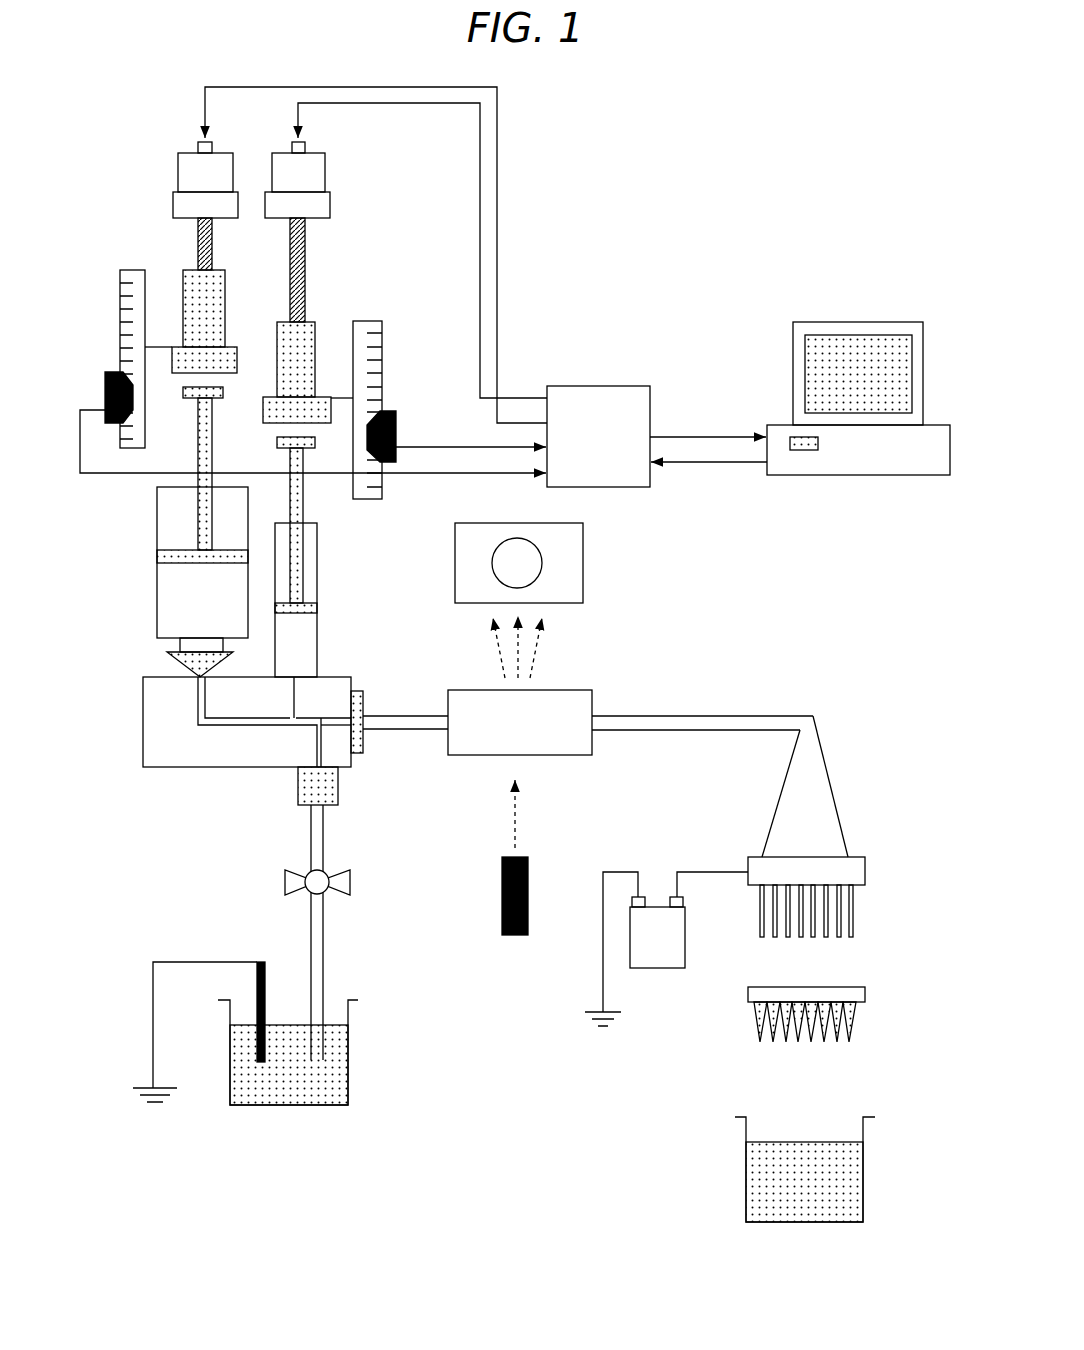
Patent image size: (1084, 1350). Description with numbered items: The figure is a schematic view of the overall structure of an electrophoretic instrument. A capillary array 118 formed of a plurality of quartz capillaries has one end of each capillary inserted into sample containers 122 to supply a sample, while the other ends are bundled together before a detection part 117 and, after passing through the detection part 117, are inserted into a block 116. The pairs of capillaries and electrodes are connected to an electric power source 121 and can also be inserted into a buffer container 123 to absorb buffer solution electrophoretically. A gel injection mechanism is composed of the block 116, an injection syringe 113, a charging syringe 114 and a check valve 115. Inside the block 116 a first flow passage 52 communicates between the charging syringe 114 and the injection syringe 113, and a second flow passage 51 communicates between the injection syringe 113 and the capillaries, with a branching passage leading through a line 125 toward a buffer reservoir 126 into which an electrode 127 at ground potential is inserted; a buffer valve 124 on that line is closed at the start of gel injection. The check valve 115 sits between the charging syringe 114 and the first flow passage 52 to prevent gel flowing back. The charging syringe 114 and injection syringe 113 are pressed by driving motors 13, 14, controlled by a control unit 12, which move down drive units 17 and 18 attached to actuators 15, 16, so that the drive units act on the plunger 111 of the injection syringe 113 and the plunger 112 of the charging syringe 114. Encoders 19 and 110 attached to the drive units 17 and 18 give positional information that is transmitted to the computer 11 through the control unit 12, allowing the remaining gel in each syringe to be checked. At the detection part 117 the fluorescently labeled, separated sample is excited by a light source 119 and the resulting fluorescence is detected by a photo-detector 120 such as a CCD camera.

The computer 11 is at (812, 477).
The control unit 12 is at (582, 387).
The driving motor 13 is at (330, 203).
The driving motor 14 is at (173, 198).
The actuator 15 is at (305, 275).
The actuator 16 is at (198, 240).
The drive unit 17 is at (315, 327).
The drive unit 18 is at (183, 282).
The encoder 19 is at (390, 405).
The encoder 110 is at (113, 371).
The plunger 111 is at (303, 575).
The plunger 112 is at (198, 530).
The injection syringe 113 is at (317, 642).
The charging syringe 114 is at (157, 615).
The check valve 115 is at (175, 670).
The block 116 is at (180, 768).
The second flow passage 51 is at (327, 720).
The first flow passage 52 is at (240, 722).
The detection part 117 is at (558, 686).
The capillary array 118 is at (723, 716).
The light source 119 is at (502, 857).
The photo-detector 120 is at (583, 567).
The electric power source 121 is at (657, 970).
The sample container 122 is at (865, 993).
The buffer container 123 is at (863, 1178).
The buffer valve 124 is at (350, 882).
The tube 125 is at (323, 943).
The buffer reservoir 126 is at (348, 1036).
The electrode 127 is at (257, 962).